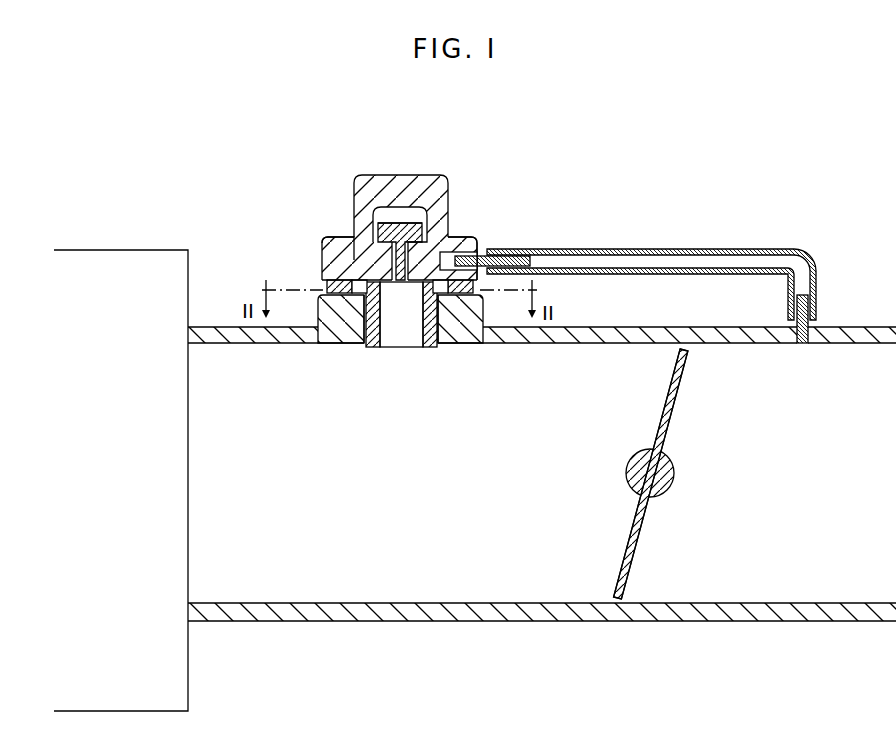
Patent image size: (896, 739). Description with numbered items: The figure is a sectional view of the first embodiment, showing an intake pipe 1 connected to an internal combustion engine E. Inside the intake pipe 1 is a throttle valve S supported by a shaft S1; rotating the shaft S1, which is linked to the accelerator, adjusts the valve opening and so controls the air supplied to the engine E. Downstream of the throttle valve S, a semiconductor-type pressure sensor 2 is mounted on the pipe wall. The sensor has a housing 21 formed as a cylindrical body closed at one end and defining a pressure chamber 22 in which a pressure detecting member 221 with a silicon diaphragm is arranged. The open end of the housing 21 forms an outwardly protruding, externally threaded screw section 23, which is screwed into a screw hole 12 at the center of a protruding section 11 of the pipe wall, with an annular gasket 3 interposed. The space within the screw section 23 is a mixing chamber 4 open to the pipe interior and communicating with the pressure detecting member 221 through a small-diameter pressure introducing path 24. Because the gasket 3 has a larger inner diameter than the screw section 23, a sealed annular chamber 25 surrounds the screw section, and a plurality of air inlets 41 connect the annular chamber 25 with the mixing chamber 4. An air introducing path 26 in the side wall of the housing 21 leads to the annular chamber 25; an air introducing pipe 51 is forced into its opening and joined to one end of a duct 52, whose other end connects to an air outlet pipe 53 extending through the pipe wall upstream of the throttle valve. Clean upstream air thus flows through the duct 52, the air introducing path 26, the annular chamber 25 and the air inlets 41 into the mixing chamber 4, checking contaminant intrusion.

The intake pipe 1 is at (545, 621).
The internal combustion engine E is at (183, 670).
The pressure sensor 2 is at (447, 177).
The housing 21 is at (422, 175).
The pressure chamber 22 is at (400, 216).
The pressure detecting member 221 is at (386, 221).
The screw section 23 is at (443, 325).
The pressure introducing path 24 is at (357, 258).
The annular chamber 25 is at (340, 258).
The air introducing path 26 is at (453, 244).
The annular gasket 3 is at (323, 259).
The mixing chamber 4 is at (402, 323).
The air inlets 41 is at (385, 295).
The air introducing pipe 51 is at (484, 248).
The duct 52 is at (688, 249).
The air outlet pipe 53 is at (815, 307).
The protruding section 11 is at (483, 308).
The screw hole 12 is at (360, 332).
The throttle valve S is at (633, 567).
The shaft S1 is at (673, 483).